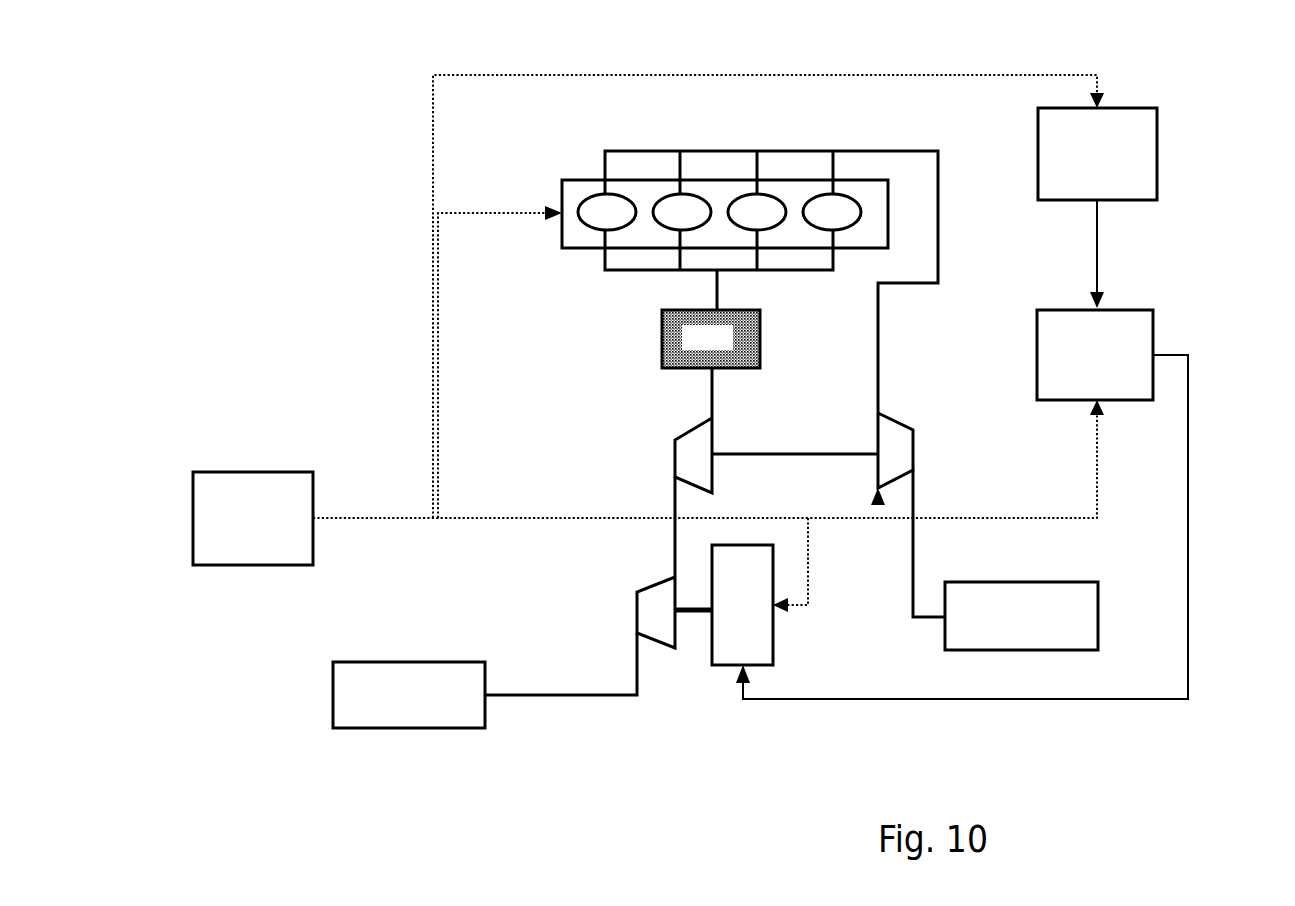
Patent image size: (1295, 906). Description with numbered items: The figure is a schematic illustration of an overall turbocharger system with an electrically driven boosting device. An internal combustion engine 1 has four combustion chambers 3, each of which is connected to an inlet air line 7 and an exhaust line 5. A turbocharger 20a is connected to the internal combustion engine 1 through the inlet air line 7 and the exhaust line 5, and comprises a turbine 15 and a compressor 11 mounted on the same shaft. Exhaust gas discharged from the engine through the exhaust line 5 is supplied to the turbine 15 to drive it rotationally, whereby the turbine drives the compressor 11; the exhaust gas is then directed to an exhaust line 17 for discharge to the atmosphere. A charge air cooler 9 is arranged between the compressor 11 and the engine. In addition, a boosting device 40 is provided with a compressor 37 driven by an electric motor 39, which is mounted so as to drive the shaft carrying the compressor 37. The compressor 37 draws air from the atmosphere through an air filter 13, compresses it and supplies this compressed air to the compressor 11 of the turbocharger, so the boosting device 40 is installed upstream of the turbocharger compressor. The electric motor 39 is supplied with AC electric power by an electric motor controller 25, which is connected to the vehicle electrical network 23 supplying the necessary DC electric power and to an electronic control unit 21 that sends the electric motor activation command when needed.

The internal combustion engine 1 is at (570, 179).
The combustion chambers 3 is at (665, 215).
The exhaust line 5 is at (800, 151).
The inlet air line 7 is at (604, 267).
The charge air cooler 9 is at (661, 343).
The compressor 11 is at (688, 455).
The air filter 13 is at (433, 661).
The turbine 15 is at (893, 445).
The exhaust line 17 is at (1098, 608).
The turbocharger 20a is at (795, 432).
The electronic control unit 21 is at (262, 566).
The vehicle electrical network 23 is at (1157, 108).
The electric motor controller 25 is at (1148, 335).
The compressor 37 is at (661, 648).
The electric motor 39 is at (762, 666).
The boosting device 40 is at (709, 706).